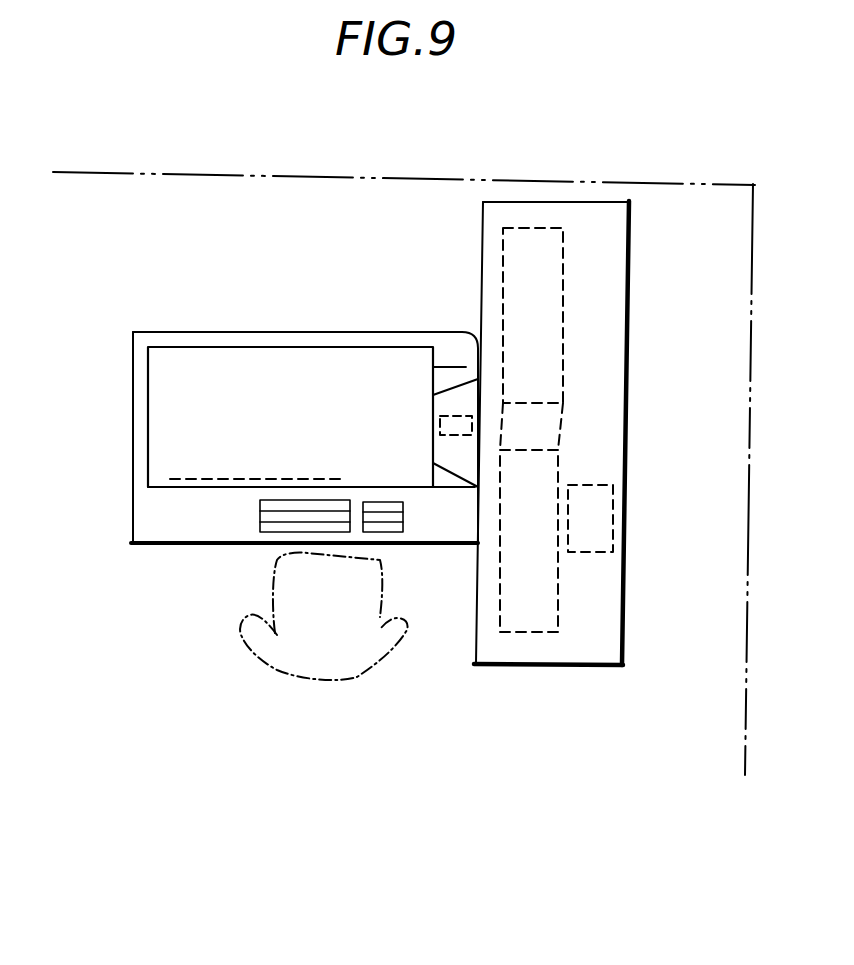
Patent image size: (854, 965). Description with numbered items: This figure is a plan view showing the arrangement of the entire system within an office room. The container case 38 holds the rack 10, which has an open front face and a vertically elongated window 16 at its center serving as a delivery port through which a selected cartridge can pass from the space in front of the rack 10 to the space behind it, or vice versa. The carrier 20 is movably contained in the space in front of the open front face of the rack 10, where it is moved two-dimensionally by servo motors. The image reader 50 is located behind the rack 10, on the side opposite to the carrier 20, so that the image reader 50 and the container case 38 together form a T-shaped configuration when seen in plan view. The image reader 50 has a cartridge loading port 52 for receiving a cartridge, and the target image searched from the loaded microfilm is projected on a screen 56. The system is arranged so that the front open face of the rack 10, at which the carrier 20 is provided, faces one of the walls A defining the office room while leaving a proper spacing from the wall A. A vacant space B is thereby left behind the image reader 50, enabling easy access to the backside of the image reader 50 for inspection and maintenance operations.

The rack 10 is at (537, 635).
The window 16 is at (540, 407).
The carrier 20 is at (590, 552).
The container case 38 is at (590, 668).
The image reader 50 is at (165, 547).
The cartridge loading port 52 is at (451, 421).
The screen 56 is at (192, 480).
The wall A is at (745, 728).
The vacant space B is at (271, 269).